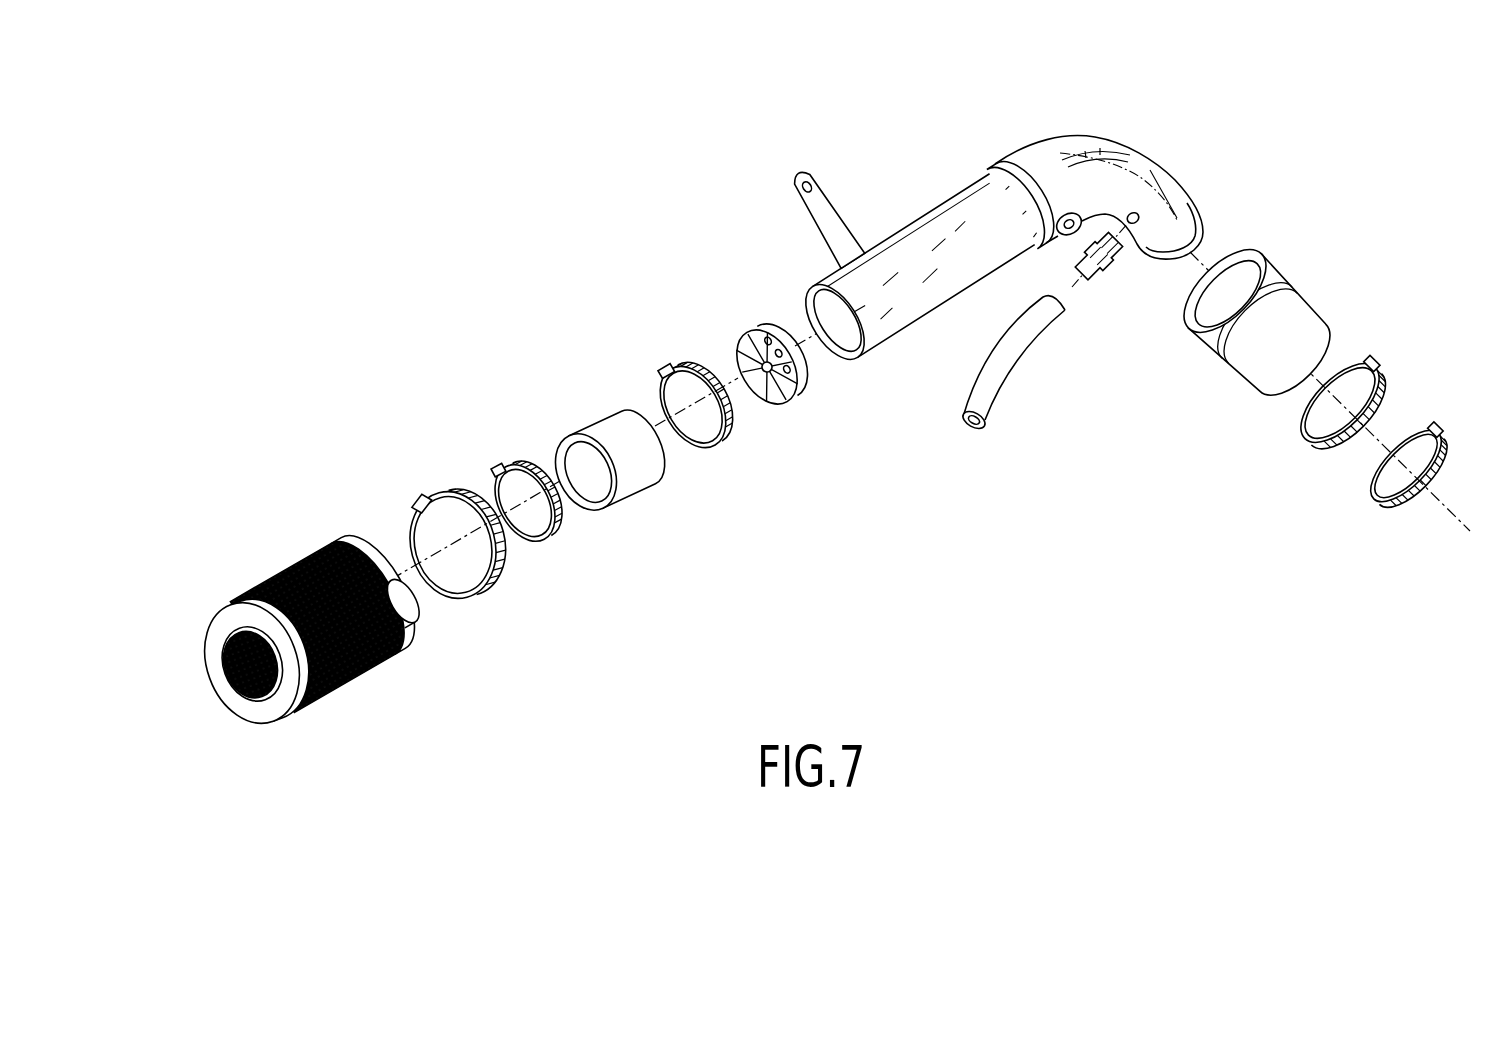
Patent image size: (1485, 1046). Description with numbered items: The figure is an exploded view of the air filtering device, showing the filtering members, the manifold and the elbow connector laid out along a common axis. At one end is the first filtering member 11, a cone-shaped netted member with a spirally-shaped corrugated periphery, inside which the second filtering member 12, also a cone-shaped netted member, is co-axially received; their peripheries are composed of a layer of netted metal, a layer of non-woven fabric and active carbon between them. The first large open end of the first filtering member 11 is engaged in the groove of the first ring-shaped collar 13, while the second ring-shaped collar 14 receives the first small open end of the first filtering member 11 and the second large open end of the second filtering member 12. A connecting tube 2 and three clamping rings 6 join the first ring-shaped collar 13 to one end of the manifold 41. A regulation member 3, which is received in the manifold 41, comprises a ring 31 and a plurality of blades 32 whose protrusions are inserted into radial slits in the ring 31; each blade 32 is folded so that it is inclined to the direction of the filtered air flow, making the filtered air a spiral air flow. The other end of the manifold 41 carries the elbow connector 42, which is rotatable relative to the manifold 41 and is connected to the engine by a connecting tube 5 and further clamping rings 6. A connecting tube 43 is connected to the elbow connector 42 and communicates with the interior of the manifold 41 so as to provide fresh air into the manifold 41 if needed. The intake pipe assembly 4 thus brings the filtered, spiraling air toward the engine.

The connecting tube 2 is at (593, 410).
The regulation member 3 is at (770, 368).
The ring 31 is at (793, 392).
The blades 32 is at (758, 388).
The intake pipe 4 is at (971, 236).
The manifold 41 is at (935, 252).
The elbow connector 42 is at (1152, 160).
The connecting tube 43 is at (1104, 275).
The connecting tube 5 is at (1280, 290).
The clamping rings 6 is at (503, 468).
The first filtering member 11 is at (315, 625).
The second filtering member 12 is at (250, 692).
The first ring-shaped collar 13 is at (413, 605).
The second ring-shaped collar 14 is at (212, 637).